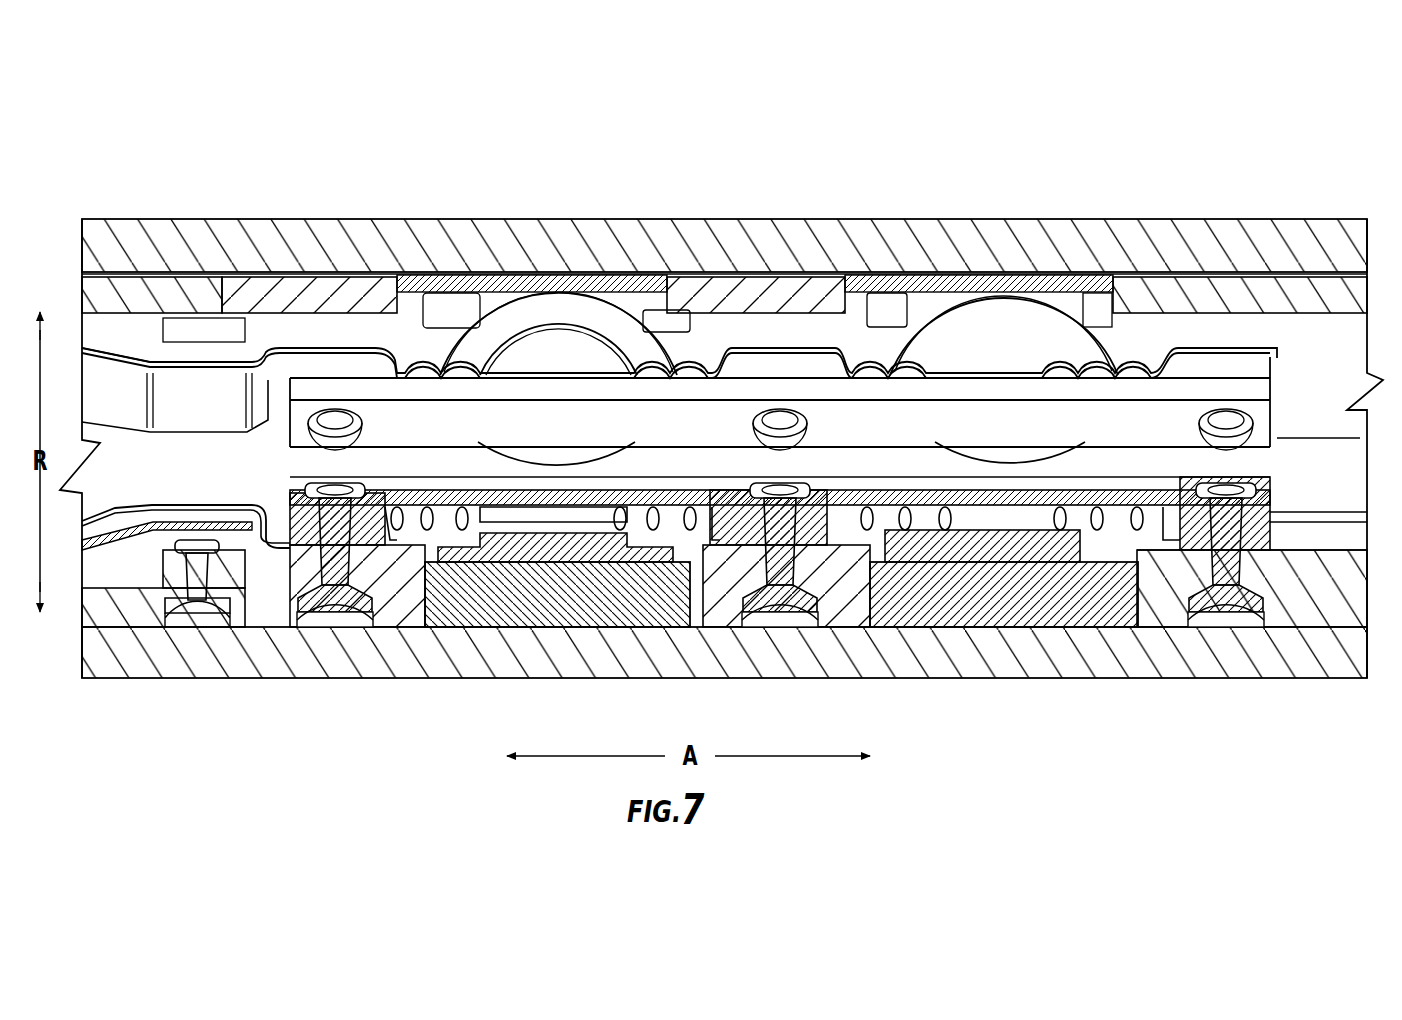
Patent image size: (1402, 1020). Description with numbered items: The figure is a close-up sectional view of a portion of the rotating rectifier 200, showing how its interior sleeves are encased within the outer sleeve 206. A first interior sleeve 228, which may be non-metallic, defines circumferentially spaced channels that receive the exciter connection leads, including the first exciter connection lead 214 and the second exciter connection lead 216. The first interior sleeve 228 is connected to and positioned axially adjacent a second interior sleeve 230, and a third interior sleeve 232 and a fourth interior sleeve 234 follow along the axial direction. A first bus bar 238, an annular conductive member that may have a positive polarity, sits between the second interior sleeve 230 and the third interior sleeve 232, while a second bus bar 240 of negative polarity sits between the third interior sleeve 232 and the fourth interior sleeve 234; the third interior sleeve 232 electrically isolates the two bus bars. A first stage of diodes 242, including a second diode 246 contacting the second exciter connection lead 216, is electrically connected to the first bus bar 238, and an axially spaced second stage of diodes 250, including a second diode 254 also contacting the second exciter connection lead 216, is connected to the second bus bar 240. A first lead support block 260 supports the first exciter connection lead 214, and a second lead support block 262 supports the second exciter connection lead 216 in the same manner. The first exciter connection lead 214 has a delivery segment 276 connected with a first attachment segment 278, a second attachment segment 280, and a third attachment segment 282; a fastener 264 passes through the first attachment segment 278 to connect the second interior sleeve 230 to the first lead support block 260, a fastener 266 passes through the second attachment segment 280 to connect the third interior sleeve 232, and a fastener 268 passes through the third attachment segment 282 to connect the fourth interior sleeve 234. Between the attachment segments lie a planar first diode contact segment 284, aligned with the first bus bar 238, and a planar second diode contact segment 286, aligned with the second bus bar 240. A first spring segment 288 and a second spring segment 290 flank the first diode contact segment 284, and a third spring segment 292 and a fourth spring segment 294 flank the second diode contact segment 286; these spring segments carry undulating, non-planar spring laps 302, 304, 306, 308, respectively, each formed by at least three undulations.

The rotating rectifier 200 is at (570, 110).
The outer sleeve 206 is at (1253, 662).
The first exciter connection lead 214 is at (195, 365).
The second exciter connection lead 216 is at (205, 535).
The first interior sleeve 228 is at (145, 288).
The second interior sleeve 230 is at (267, 297).
The third interior sleeve 232 is at (765, 290).
The fourth interior sleeve 234 is at (1227, 300).
The first bus bar 238 is at (552, 283).
The second bus bar 240 is at (1052, 285).
The first stage of diodes 242 is at (540, 610).
The second diode 246 is at (513, 547).
The second stage of diodes 250 is at (978, 592).
The second diode 254 is at (1062, 552).
The first lead support block 260 is at (705, 425).
The second lead support block 262 is at (303, 517).
The fastener 264 is at (332, 425).
The fastener 266 is at (790, 353).
The fastener 268 is at (1223, 420).
The delivery segment 276 is at (120, 355).
The first attachment segment 278 is at (347, 353).
The second attachment segment 280 is at (787, 423).
The third attachment segment 282 is at (1262, 350).
The first diode contact segment 284 is at (562, 367).
The second diode contact segment 286 is at (1000, 367).
The first spring segment 288 is at (480, 370).
The second spring segment 290 is at (703, 370).
The third spring segment 292 is at (880, 367).
The fourth spring segment 294 is at (1140, 357).
The spring laps 302 is at (422, 352).
The spring laps 304 is at (653, 352).
The spring laps 306 is at (917, 355).
The spring laps 308 is at (1093, 352).